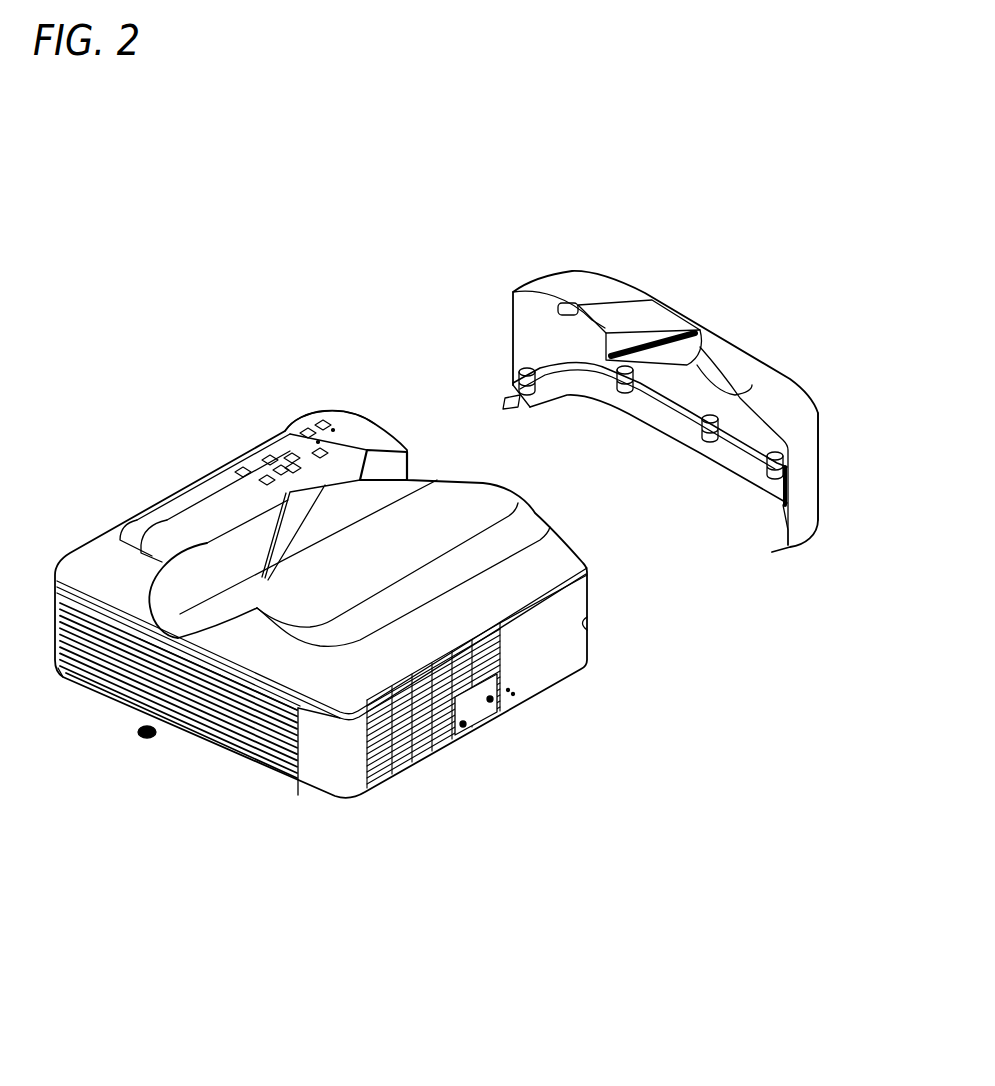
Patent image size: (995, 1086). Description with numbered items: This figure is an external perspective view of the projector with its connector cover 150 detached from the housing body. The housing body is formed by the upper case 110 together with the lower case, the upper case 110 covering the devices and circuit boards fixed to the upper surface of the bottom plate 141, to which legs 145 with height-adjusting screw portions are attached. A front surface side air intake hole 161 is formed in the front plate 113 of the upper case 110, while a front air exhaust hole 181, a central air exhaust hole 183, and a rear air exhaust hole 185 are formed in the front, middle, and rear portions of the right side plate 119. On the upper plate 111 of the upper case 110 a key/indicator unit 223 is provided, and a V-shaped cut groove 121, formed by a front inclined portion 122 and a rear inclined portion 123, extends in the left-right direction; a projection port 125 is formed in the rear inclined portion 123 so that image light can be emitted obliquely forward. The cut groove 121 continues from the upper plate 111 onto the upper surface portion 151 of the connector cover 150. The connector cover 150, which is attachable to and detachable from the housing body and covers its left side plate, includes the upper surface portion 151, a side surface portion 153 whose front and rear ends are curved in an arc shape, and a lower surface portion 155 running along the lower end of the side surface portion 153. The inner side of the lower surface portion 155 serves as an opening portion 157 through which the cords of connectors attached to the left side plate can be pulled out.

The upper case 110 is at (321, 604).
The upper plate 111 is at (427, 543).
The front plate 113 is at (547, 637).
The right side plate 119 is at (170, 735).
The cut groove 121 is at (647, 325).
The front inclined portion 122 is at (243, 610).
The rear inclined portion 123 is at (236, 545).
The projection port 125 is at (314, 490).
The bottom plate 141 is at (318, 803).
The leg 145 is at (143, 740).
The connector cover 150 is at (607, 200).
The upper surface portion 151 is at (730, 355).
The side surface portion 153 is at (808, 497).
The lower surface portion 155 is at (558, 383).
The opening portion 157 is at (704, 482).
The front surface side air intake hole 161 is at (428, 733).
The front air exhaust hole 181 is at (260, 772).
The central air exhaust hole 183 is at (220, 742).
The rear air exhaust hole 185 is at (87, 653).
The key/indicator unit 223 is at (290, 437).